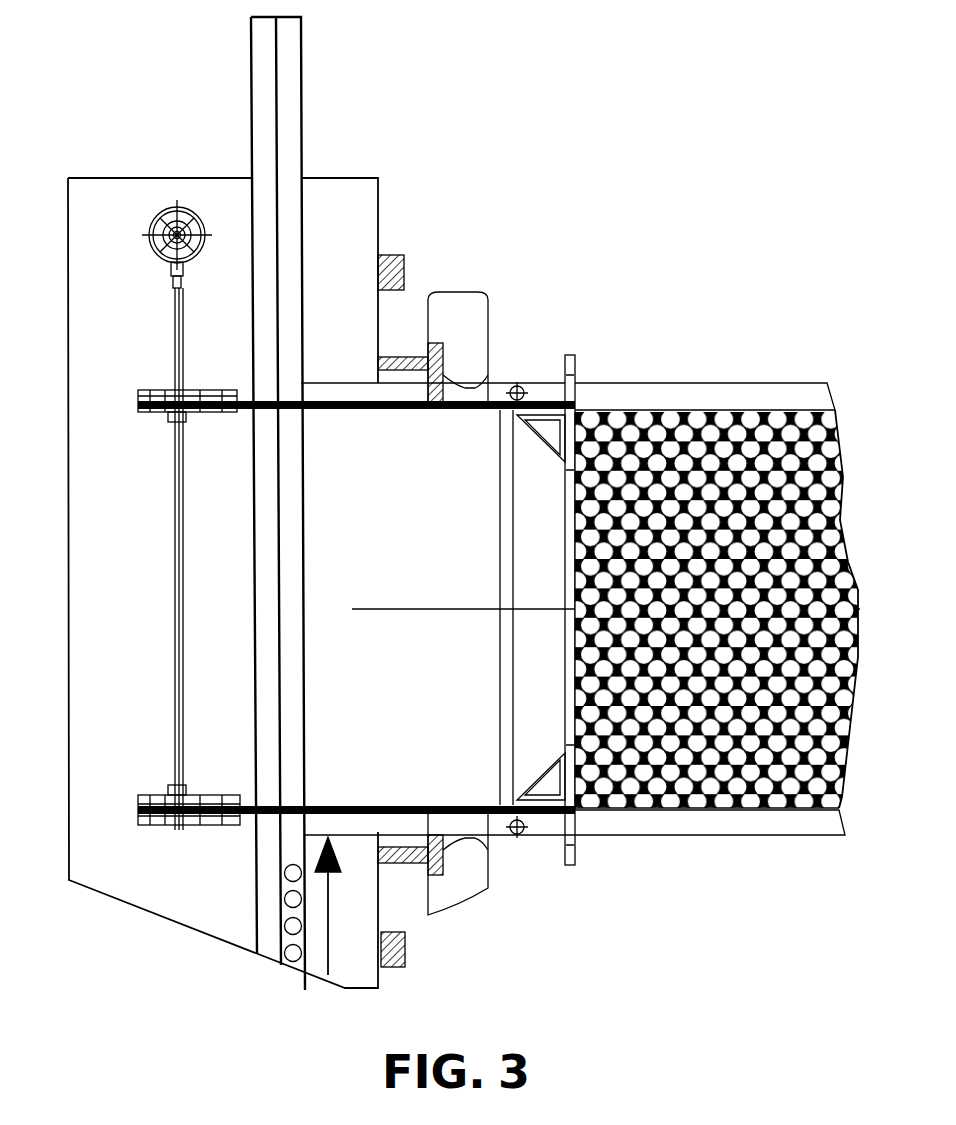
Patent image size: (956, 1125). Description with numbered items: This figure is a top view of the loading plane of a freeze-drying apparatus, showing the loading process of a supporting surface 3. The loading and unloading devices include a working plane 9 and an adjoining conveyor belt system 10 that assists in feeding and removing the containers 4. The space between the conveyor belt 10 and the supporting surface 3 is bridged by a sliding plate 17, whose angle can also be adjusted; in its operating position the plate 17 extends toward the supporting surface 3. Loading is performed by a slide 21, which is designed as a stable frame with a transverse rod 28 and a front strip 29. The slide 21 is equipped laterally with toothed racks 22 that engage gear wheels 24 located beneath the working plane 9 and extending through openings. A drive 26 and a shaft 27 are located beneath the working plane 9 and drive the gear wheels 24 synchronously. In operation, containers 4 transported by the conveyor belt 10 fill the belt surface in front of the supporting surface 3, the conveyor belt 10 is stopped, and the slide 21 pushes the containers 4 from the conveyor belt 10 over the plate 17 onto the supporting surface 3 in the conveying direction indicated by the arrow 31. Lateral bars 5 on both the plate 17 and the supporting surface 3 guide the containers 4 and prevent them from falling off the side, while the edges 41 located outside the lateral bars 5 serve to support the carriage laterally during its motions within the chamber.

The supporting surface 3 is at (845, 580).
The container 4 is at (810, 452).
The lateral bar 5 is at (770, 410).
The working plane 9 is at (97, 500).
The conveyor belt system 10 is at (290, 145).
The sliding plate 17 is at (396, 506).
The slide 21 is at (540, 398).
The toothed rack 22 is at (247, 398).
The gear wheel 24 is at (210, 410).
The drive 26 is at (166, 208).
The shaft 27 is at (178, 570).
The transverse rod 28 is at (502, 548).
The front strip 29 is at (578, 830).
The arrow 31 is at (328, 918).
The edge 41 is at (680, 825).